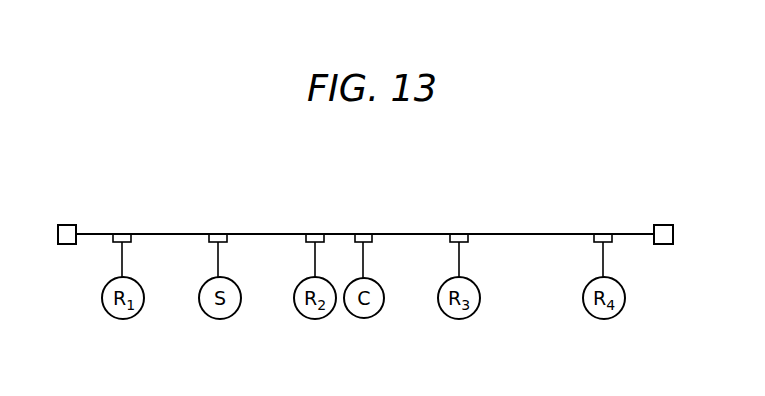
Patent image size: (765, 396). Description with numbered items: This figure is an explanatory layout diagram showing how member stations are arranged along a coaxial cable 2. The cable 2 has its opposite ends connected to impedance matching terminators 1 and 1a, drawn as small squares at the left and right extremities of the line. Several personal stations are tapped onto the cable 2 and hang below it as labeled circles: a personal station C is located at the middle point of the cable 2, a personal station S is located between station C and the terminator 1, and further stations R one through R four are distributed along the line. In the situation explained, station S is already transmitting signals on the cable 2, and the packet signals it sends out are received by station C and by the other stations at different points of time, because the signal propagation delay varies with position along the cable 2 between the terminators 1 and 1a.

The impedance matching terminator 1 is at (66, 225).
The impedance matching terminator 1a is at (662, 225).
The coaxial cable 2 is at (532, 230).